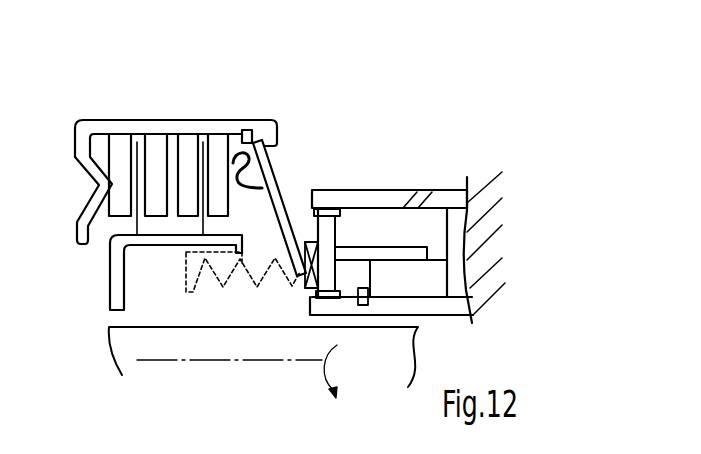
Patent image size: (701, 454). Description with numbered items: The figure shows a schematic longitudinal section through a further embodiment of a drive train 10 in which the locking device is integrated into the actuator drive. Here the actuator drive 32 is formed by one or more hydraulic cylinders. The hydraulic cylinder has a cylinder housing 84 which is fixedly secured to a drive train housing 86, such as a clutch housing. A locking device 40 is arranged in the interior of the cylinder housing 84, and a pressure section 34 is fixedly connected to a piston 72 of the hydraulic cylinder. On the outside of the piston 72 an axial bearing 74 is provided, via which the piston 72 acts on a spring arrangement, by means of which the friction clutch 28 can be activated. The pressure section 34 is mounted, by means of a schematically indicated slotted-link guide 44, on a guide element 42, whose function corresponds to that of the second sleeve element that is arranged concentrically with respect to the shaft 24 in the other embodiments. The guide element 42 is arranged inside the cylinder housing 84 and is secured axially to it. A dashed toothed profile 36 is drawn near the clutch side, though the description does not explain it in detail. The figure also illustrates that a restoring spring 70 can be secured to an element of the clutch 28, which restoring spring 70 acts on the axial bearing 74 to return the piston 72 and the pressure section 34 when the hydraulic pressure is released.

The drive train 10 is at (512, 145).
The shaft 24 is at (147, 344).
The friction clutch 28 is at (175, 153).
The actuator drive 32 is at (459, 225).
The pressure section 34 is at (412, 255).
The toothed catch 36 is at (281, 233).
The locking device 40 is at (437, 221).
The guide element 42 is at (425, 283).
The slotted-link guide 44 is at (390, 262).
The restoring spring 70 is at (243, 268).
The piston 72 is at (326, 222).
The axial bearing 74 is at (296, 226).
The cylinder housing 84 is at (437, 200).
The drive train housing 86 is at (488, 226).